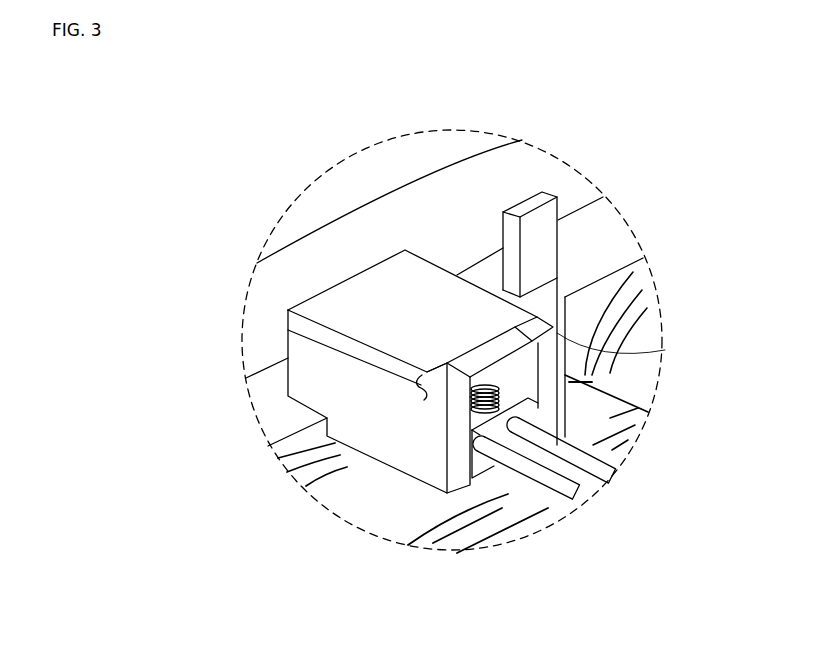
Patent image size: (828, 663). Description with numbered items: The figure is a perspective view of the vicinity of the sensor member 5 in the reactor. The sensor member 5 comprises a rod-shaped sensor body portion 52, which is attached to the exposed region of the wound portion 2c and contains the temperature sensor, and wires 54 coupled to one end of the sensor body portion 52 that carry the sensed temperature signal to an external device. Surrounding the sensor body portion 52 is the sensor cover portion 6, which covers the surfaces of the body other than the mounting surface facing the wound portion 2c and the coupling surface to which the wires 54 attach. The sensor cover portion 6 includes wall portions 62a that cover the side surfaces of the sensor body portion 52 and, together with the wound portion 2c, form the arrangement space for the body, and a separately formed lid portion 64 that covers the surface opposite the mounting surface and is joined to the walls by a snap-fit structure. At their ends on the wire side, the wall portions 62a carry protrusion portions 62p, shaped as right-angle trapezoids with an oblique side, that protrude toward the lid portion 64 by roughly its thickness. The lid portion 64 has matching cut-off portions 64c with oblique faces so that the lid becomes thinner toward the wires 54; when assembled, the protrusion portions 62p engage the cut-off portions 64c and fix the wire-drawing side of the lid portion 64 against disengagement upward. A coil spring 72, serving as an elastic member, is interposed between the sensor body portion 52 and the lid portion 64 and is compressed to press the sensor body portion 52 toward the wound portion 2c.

The sensor cover portion 6 is at (385, 245).
The lid portion 64 is at (385, 320).
The cut-off portion 64c is at (567, 343).
The wall portion 62a is at (300, 380).
The protrusion portion 62p is at (422, 392).
The wound portion 2c is at (328, 502).
The coil spring 72 is at (560, 398).
The wires 54 is at (590, 493).
The sensor body portion 52 is at (497, 468).
The sensor member 5 is at (521, 482).